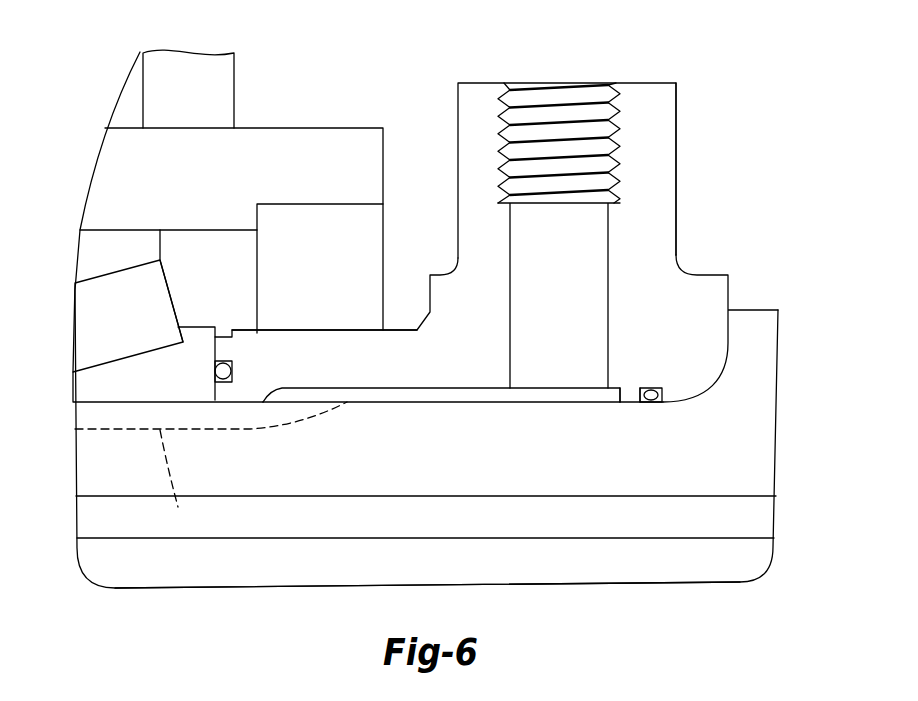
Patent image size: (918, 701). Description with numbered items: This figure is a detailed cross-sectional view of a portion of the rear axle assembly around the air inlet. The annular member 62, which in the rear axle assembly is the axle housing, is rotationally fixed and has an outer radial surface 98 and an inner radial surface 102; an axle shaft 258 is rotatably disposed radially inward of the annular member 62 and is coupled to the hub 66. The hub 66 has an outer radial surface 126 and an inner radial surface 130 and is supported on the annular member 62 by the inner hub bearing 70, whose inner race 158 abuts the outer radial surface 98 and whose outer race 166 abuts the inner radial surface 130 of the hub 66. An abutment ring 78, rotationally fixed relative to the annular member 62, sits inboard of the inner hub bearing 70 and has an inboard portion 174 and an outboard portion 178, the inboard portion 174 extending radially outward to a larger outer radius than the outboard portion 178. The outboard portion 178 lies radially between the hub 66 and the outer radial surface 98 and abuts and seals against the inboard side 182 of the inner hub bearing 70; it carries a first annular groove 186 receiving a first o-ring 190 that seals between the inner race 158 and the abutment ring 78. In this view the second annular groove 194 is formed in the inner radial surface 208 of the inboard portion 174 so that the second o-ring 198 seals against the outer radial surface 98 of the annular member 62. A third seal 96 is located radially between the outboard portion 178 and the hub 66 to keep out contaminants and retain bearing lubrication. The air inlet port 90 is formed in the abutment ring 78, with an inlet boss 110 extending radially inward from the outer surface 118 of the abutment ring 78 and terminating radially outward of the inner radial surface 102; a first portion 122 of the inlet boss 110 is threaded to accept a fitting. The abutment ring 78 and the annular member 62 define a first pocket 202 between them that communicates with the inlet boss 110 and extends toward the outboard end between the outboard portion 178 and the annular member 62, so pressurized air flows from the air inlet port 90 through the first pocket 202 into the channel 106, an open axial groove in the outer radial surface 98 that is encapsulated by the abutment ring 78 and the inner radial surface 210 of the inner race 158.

The annular member 62 is at (755, 478).
The hub 66 is at (103, 150).
The outer radial surface 126 is at (125, 127).
The inner radial surface 130 is at (118, 228).
The outer race 166 is at (90, 250).
The inner hub bearing 70 is at (83, 320).
The inboard side 182 is at (223, 327).
The outer surface 118 is at (640, 82).
The inboard portion 174 is at (665, 267).
The first o-ring 190 is at (222, 380).
The third seal 96 is at (290, 222).
The outboard portion 178 is at (333, 328).
The outer radial surface 98 is at (442, 402).
The inner race 158 is at (83, 390).
The inner radial surface 210 is at (137, 403).
The channel 106 is at (173, 481).
The inner radial surface 102 is at (537, 497).
The axle shaft 258 is at (720, 567).
The first pocket 202 is at (553, 398).
The inner radial surface 208 is at (632, 400).
The first annular groove 186 is at (233, 372).
The second o-ring 198 is at (662, 402).
The second annular groove 194 is at (652, 388).
The inlet boss 110 is at (607, 243).
The air inlet port 90 is at (568, 85).
The first portion 122 is at (620, 122).
The abutment ring 78 is at (662, 190).